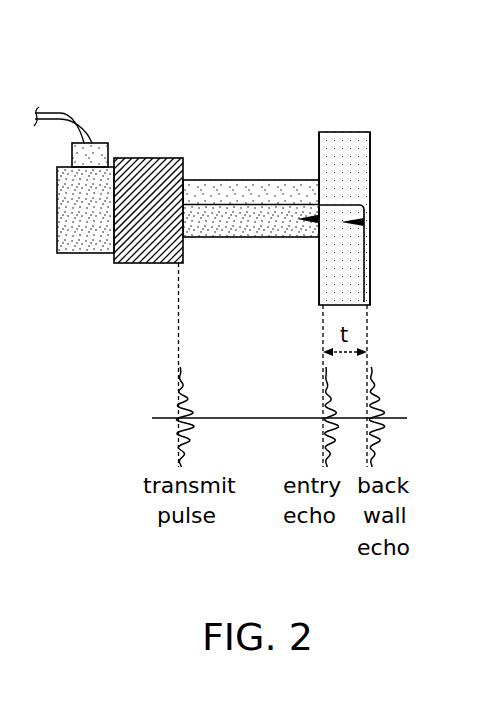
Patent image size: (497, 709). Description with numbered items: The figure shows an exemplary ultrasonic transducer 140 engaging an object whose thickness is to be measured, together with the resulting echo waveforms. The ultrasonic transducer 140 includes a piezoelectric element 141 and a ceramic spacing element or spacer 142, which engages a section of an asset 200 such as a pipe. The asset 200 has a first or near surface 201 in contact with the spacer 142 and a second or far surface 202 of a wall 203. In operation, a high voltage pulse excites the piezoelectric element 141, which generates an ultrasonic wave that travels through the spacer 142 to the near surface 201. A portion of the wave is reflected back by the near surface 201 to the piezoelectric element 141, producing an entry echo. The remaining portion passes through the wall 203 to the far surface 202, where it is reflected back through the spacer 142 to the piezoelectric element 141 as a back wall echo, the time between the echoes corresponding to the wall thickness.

The ultrasonic transducer 140 is at (118, 109).
The piezoelectric element 141 is at (148, 157).
The ceramic spacing element 142 is at (215, 184).
The asset 200 is at (350, 131).
The near surface 201 is at (319, 147).
The far surface 202 is at (370, 157).
The wall 203 is at (362, 188).